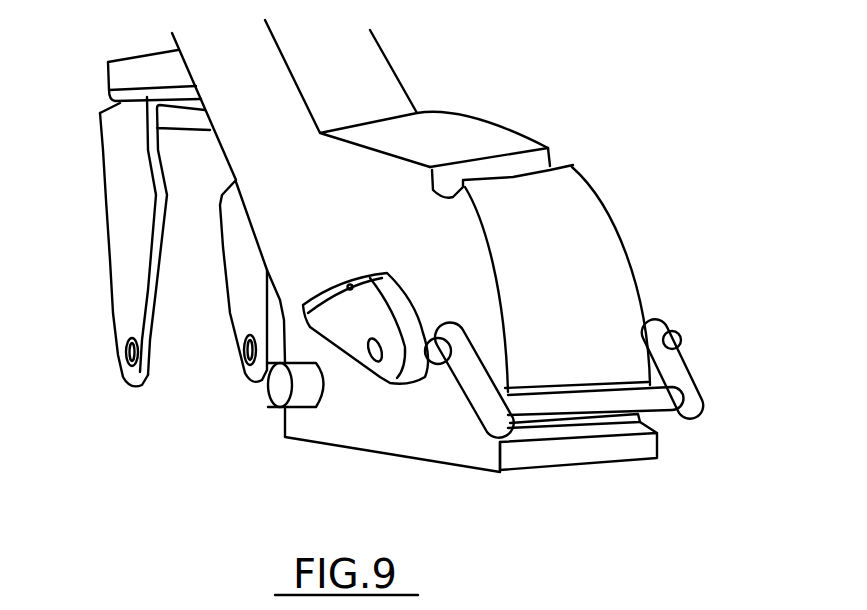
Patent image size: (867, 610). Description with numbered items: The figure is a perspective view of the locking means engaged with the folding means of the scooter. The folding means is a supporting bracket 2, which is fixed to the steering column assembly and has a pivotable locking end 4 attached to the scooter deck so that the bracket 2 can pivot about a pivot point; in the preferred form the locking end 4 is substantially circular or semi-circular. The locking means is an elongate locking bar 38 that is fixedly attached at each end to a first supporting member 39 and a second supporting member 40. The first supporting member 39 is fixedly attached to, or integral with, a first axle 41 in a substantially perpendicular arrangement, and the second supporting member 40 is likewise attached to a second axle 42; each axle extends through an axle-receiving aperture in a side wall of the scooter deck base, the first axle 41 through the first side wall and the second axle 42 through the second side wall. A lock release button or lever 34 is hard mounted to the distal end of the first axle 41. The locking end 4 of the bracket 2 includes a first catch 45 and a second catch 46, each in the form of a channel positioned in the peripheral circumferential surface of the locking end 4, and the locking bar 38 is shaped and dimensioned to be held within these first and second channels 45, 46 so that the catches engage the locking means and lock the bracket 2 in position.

The supporting bracket 2 is at (360, 68).
The pivotable locking end 4 is at (455, 128).
The second catch 46 is at (557, 163).
The lock release button or lever 34 is at (363, 363).
The first axle 41 is at (437, 357).
The first supporting member 39 is at (487, 417).
The second supporting member 40 is at (690, 380).
The second axle 42 is at (663, 332).
The first catch 45 is at (653, 430).
The locking bar 38 is at (572, 403).